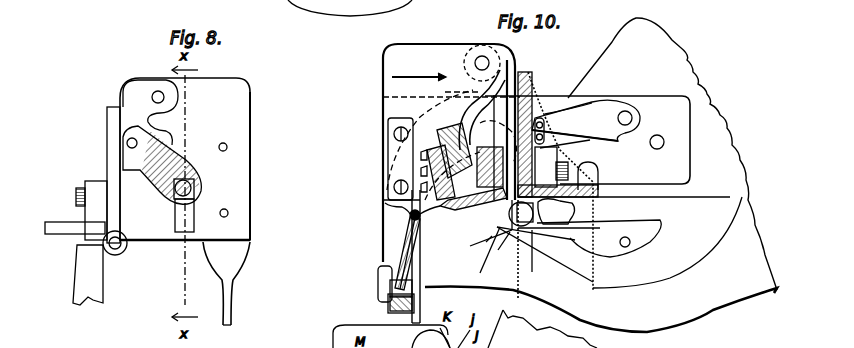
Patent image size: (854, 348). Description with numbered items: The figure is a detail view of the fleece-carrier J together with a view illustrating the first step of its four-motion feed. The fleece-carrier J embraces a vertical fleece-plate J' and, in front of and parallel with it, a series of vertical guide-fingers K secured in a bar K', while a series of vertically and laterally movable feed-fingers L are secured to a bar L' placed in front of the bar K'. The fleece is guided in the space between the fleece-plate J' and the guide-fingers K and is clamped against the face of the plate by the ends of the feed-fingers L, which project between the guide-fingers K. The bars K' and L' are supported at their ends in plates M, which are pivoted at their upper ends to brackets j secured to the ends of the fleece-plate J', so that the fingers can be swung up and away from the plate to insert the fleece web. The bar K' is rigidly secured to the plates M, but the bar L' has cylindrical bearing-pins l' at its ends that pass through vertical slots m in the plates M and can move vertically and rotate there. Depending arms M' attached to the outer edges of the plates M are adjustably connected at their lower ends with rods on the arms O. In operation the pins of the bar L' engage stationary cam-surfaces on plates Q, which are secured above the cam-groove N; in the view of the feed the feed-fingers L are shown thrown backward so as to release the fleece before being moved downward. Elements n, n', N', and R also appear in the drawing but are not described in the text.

In FIG. 8, the plates M is at (185, 159).
In FIG. 10, the plates M is at (449, 153).
In FIG. 8, the depending arms M' is at (227, 283).
In FIG. 10, the depending arms M' is at (427, 256).
In FIG. 8, the fleece-carrier J is at (255, 166).
In FIG. 10, the fleece-carrier J is at (386, 186).
In FIG. 8, the fleece-plate J' is at (99, 175).
In FIG. 10, the fleece-plate J' is at (558, 131).
In FIG. 8, the brackets j is at (150, 112).
In FIG. 10, the brackets j is at (510, 125).
In FIG. 10, the feed-fingers L is at (481, 128).
In FIG. 10, the feed-finger bar L' is at (446, 143).
In FIG. 8, the bearing-pins l' is at (197, 188).
In FIG. 8, the vertical slots m is at (190, 220).
In FIG. 10, the vertical slots m is at (385, 203).
In FIG. 10, the bar n is at (473, 208).
In FIG. 10, the arc n' is at (667, 242).
In FIG. 10, the cam-groove N is at (624, 208).
In FIG. 10, the arm lobe N' is at (599, 238).
In FIG. 8, the arms O is at (88, 275).
In FIG. 10, the arms O is at (556, 211).
In FIG. 10, the guide-fingers K is at (483, 52).
In FIG. 10, the guide-finger bar K' is at (488, 223).
In FIG. 10, the cam-plates Q is at (587, 140).
In FIG. 10, the rod R is at (492, 250).